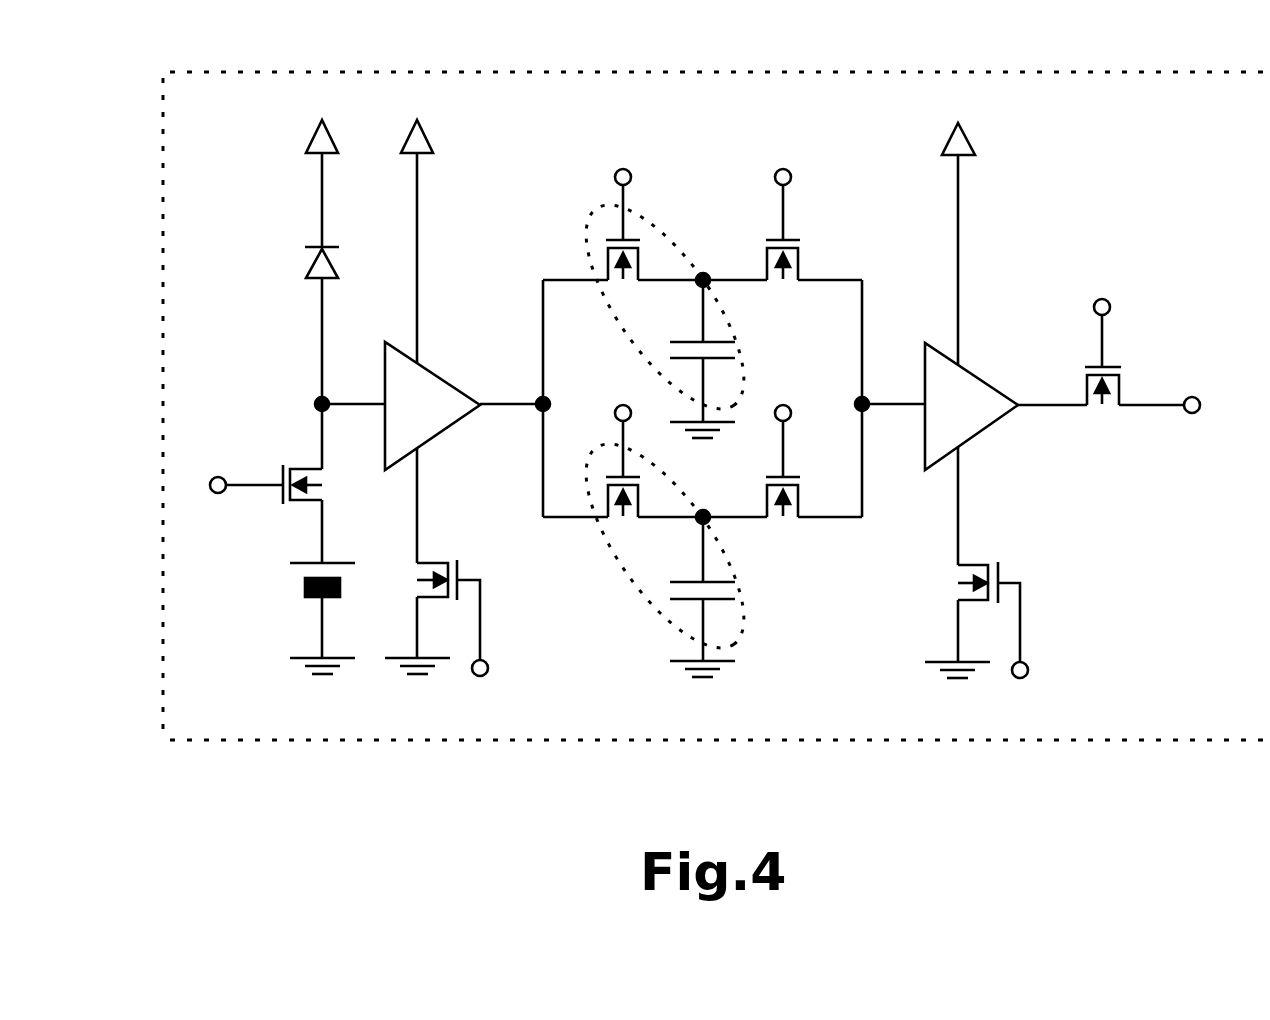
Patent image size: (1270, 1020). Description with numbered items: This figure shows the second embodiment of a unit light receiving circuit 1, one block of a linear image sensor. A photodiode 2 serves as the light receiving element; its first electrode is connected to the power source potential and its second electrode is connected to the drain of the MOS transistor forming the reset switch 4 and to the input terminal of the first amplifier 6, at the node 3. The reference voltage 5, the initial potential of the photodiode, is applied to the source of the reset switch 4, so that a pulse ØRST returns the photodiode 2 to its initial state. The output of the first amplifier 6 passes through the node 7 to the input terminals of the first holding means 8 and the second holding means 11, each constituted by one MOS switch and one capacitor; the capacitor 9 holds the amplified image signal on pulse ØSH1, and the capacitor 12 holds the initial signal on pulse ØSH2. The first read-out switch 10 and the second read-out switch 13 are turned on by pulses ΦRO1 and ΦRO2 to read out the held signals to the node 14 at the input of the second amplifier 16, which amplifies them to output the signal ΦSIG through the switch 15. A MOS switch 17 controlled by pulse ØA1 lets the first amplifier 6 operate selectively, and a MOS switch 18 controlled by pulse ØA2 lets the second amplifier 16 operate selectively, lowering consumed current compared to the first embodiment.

The unit light receiving circuit 1 is at (513, 72).
The photodiode 2 is at (307, 263).
The node 3 is at (307, 400).
The reset switch 4 is at (300, 503).
The reference voltage VREF 5 is at (305, 572).
The first amplifier 6 is at (432, 440).
The node 7 is at (538, 402).
The first holding means 8 is at (553, 247).
The hold capacitor 9 is at (715, 277).
The first read-out switch 10 is at (803, 250).
The second holding means 11 is at (595, 533).
The hold capacitor 12 is at (708, 526).
The second read-out switch 13 is at (792, 518).
The node 14 is at (877, 400).
The switch transistor 15 is at (1110, 410).
The second amplifier 16 is at (968, 445).
The MOS switch 17 is at (418, 572).
The MOS switch 18 is at (958, 573).